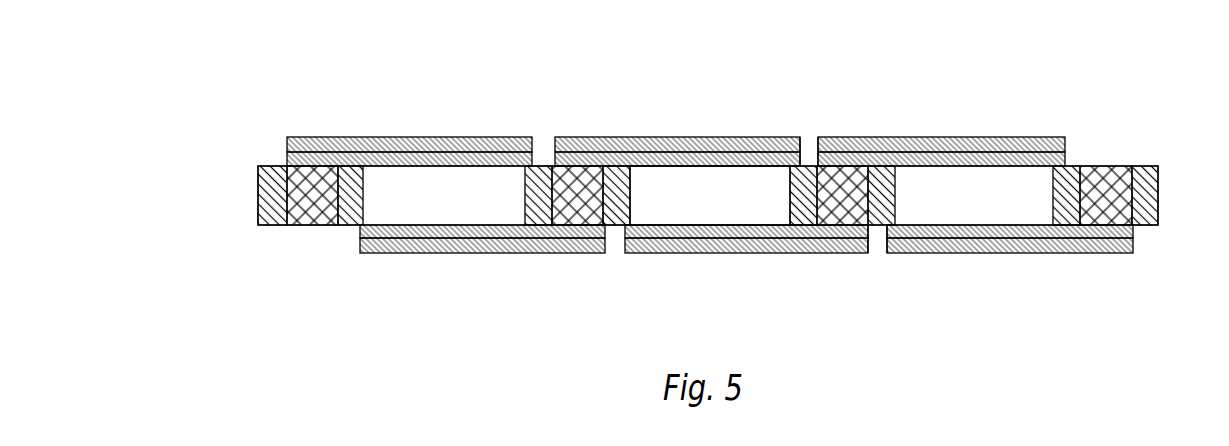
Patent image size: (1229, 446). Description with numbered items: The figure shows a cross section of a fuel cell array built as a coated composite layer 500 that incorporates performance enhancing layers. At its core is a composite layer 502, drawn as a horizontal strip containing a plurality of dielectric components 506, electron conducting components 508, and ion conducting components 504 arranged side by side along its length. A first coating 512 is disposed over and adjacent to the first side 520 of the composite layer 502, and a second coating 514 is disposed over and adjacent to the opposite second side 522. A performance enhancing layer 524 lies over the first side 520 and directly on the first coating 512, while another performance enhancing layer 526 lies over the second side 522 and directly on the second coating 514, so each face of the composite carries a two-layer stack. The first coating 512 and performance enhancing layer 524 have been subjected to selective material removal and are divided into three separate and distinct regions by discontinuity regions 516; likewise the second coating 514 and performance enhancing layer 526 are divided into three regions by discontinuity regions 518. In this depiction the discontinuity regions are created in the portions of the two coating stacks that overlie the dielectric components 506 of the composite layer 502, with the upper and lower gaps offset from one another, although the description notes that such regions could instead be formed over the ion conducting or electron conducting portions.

The coated composite layer 500 is at (262, 52).
The composite layer 502 is at (252, 165).
The ion conducting components 504 is at (703, 215).
The dielectric components 506 is at (883, 140).
The electron conducting components 508 is at (845, 213).
The first coating 512 is at (362, 150).
The second coating 514 is at (498, 238).
The discontinuity regions 516 is at (810, 157).
The discontinuity regions 518 is at (877, 235).
The first side 520 is at (1067, 165).
The second side 522 is at (1135, 228).
The performance enhancing layer 524 is at (400, 152).
The performance enhancing layer 526 is at (582, 253).